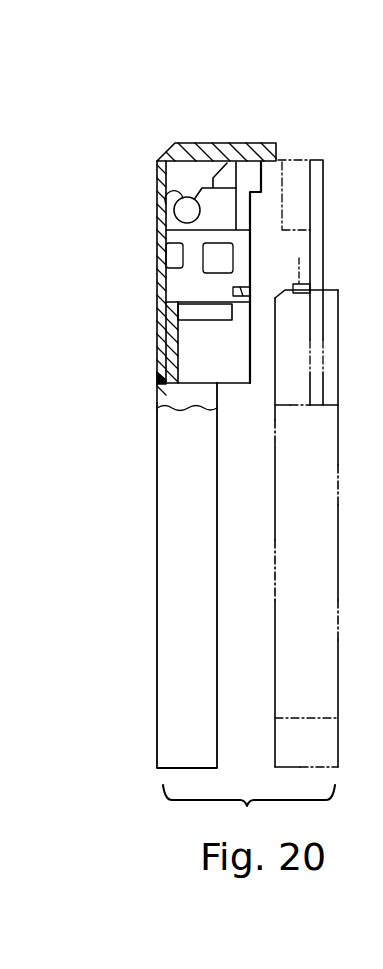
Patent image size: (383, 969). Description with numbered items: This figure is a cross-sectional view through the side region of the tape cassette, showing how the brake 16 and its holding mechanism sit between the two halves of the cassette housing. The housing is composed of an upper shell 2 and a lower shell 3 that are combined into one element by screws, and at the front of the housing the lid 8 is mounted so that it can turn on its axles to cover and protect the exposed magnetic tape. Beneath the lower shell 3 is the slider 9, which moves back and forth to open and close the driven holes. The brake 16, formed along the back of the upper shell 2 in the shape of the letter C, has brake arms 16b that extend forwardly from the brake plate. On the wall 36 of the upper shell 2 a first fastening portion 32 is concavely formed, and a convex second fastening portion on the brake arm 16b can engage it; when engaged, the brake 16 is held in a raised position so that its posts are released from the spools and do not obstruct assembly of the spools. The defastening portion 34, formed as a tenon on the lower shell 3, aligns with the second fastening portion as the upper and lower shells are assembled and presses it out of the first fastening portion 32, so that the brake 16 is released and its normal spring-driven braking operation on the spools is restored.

The upper shell 2 is at (155, 580).
The lower shell 3 is at (325, 375).
The lid 8 is at (227, 142).
The slider 9 is at (338, 555).
The brake 16 is at (183, 344).
The brake arm 16b is at (236, 392).
The first fastening portion 32 is at (252, 290).
The defastening portion 34 is at (301, 280).
The wall 36 is at (185, 290).